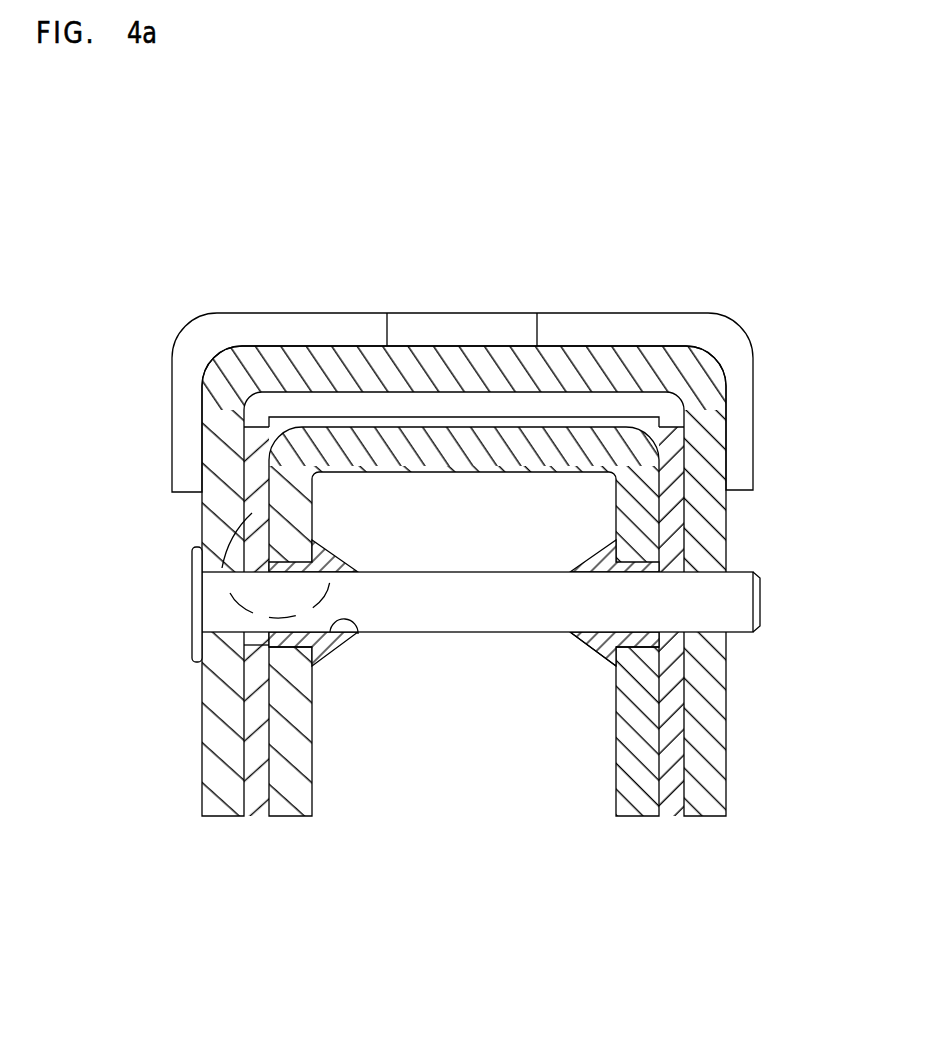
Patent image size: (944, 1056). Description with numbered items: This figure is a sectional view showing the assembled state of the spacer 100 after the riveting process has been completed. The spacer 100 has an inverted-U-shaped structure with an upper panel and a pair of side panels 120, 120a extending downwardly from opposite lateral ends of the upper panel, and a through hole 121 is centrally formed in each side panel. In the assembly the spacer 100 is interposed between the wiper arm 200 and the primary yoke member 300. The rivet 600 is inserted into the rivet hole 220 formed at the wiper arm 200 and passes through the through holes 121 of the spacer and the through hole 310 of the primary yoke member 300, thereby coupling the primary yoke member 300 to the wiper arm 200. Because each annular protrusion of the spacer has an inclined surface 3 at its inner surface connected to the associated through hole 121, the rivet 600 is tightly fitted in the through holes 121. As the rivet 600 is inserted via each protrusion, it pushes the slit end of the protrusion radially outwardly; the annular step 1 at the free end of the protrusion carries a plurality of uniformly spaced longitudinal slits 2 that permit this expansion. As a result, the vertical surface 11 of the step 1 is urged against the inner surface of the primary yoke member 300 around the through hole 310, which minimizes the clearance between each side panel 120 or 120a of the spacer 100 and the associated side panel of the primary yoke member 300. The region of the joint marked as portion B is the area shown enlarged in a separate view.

The spacer 100 is at (435, 410).
The wiper arm 200 is at (212, 817).
The primary yoke member 300 is at (300, 817).
The side panel 120 is at (267, 756).
The side panel 120a is at (672, 806).
The through hole 121 is at (264, 645).
The rivet hole 220 is at (202, 548).
The through hole 310 is at (295, 662).
The rivet 600 is at (740, 602).
The annular step 1 is at (600, 650).
The longitudinal slit 2 is at (358, 634).
The inclined surface 3 is at (262, 580).
The vertical surface 11 is at (617, 665).
The portion B is at (203, 623).